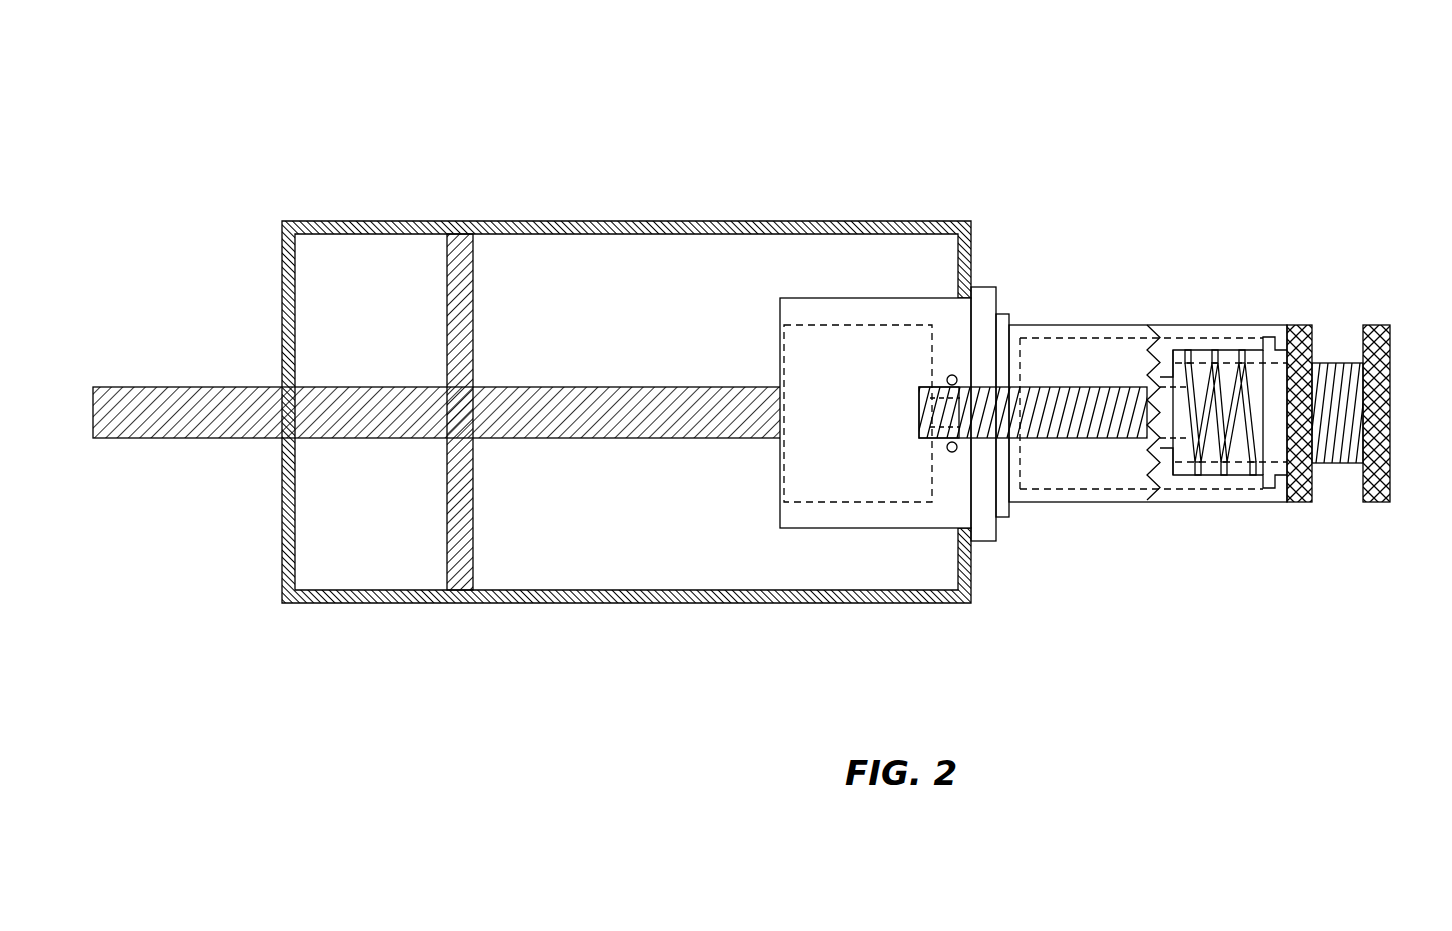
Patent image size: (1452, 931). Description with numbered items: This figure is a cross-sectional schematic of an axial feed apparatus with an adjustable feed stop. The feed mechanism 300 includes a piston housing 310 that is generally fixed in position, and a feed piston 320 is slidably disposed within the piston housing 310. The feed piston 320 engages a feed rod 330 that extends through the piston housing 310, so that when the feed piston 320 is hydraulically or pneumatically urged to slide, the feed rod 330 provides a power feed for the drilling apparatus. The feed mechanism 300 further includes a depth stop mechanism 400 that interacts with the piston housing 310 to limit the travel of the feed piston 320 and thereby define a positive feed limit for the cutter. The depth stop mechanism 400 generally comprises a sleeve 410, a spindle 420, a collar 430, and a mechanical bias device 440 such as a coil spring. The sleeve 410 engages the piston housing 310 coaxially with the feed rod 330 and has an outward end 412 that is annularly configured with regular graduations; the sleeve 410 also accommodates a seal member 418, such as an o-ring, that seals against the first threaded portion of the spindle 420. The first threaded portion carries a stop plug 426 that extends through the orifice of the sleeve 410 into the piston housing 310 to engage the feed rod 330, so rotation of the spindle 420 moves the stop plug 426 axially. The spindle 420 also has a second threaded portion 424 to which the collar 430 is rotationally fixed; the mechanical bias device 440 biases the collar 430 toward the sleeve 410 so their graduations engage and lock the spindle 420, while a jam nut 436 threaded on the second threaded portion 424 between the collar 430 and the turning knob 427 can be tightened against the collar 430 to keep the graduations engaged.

The feed mechanism 300 is at (1010, 160).
The piston housing 310 is at (661, 221).
The feed piston 320 is at (474, 309).
The feed rod 330 is at (367, 438).
The depth stop mechanism 400 is at (1024, 320).
The sleeve 410 is at (983, 530).
The end 412 is at (1116, 322).
The seal member 418 is at (949, 376).
The spindle 420 is at (1093, 440).
The second threaded portion 424 is at (1327, 370).
The stop plug 426 is at (926, 415).
The turning knob 427 is at (1385, 365).
The collar 430 is at (1232, 503).
The jam nut 436 is at (1313, 494).
The mechanical bias device 440 is at (1226, 352).